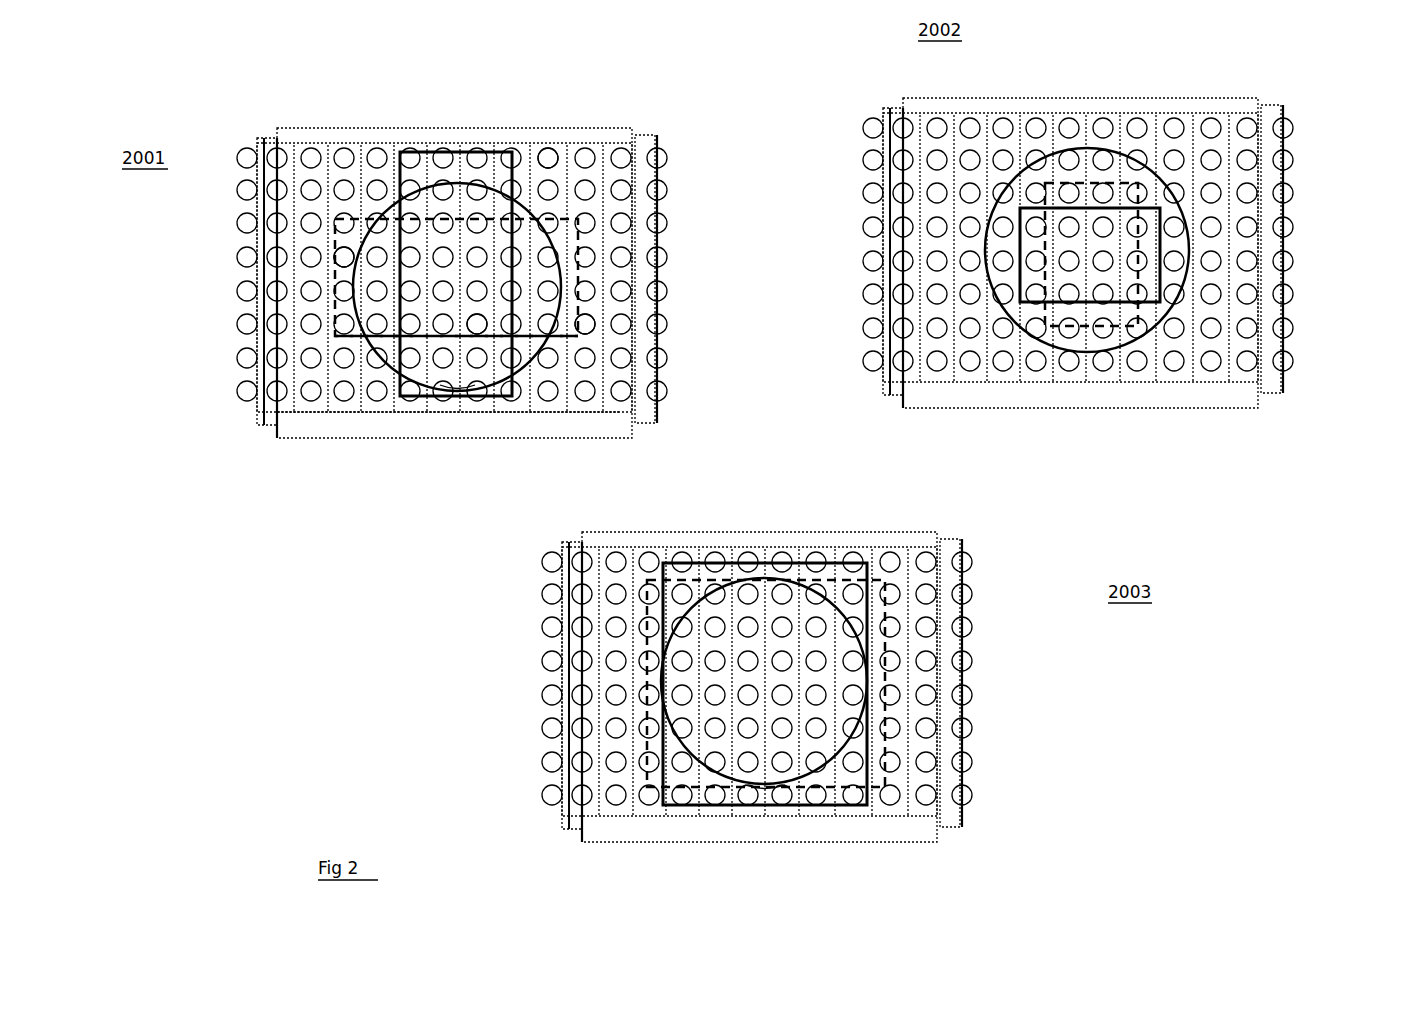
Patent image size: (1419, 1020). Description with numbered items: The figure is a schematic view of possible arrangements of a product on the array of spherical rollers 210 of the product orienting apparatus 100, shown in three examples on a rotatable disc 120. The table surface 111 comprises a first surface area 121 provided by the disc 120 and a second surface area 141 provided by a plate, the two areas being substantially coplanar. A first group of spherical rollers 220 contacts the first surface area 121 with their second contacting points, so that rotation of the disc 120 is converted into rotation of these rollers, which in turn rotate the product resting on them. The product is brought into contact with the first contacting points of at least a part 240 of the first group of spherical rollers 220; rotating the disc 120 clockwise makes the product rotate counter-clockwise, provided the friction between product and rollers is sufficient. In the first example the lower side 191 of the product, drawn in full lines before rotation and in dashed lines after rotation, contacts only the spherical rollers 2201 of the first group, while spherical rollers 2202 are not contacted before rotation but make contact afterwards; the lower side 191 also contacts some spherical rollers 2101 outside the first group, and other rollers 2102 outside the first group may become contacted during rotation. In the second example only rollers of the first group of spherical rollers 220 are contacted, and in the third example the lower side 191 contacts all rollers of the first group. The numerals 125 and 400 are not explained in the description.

The product orienting apparatus 100 is at (738, 180).
The table surface 111 is at (340, 425).
The disc 120 is at (426, 400).
The first surface area 121 is at (468, 374).
The region boundary 125 is at (745, 805).
The second surface area 141 is at (580, 425).
The lower side 191 is at (345, 218).
The spherical rollers 210 is at (262, 390).
The first group of spherical rollers 220 is at (520, 347).
The part of the first group of spherical rollers 240 is at (512, 153).
The sensing layer 400 is at (320, 426).
The spherical rollers not being part of the first group 2101 is at (553, 165).
The spherical rollers not being part of the first group 2102 is at (343, 257).
The spherical rollers 2201 is at (483, 330).
The spherical rollers 2202 is at (572, 336).